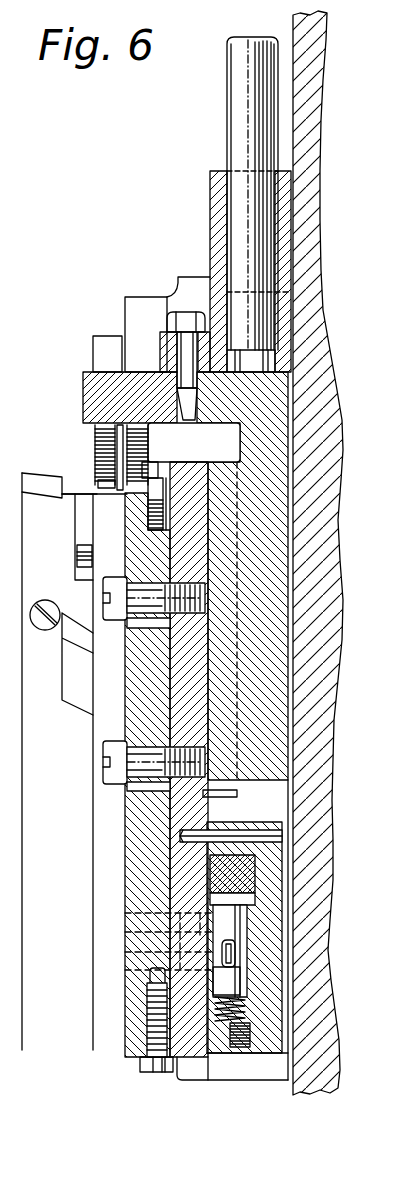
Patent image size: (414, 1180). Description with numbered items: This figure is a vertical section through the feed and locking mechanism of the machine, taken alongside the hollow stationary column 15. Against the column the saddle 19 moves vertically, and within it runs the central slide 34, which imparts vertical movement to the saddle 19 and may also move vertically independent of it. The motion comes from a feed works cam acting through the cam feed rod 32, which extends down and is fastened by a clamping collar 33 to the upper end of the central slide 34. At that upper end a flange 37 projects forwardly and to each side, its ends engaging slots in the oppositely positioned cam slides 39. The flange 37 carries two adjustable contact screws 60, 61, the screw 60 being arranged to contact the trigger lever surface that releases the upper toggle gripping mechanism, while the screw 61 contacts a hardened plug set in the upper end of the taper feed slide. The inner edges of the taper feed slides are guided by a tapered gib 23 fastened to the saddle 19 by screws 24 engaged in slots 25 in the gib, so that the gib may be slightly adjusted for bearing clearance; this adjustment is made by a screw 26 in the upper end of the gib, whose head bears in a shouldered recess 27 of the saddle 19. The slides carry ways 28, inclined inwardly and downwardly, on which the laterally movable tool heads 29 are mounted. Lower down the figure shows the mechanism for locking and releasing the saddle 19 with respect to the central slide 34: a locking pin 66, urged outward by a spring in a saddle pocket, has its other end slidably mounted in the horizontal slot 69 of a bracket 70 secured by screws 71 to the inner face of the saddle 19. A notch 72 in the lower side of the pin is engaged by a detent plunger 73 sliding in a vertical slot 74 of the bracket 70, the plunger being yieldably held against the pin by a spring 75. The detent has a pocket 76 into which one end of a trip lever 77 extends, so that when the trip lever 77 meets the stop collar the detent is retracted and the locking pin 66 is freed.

The hollow stationary column 15 is at (335, 449).
The saddle 19 is at (195, 694).
The tapered gib 23 is at (140, 712).
The screws 24 is at (135, 592).
The slots 25 is at (150, 624).
The screw 26 is at (100, 478).
The shouldered recess 27 is at (172, 462).
The ways 28 is at (82, 693).
The tool heads 29 is at (59, 761).
The cam feed rod 32 is at (238, 135).
The clamping collar 33 is at (210, 222).
The central slide 34 is at (270, 517).
The flange 37 is at (90, 388).
The cam slides 39 is at (107, 352).
The adjustable contact screw 60 is at (97, 432).
The adjustable contact screw 61 is at (97, 452).
The locking pin 66 is at (238, 877).
The horizontal slot 69 is at (283, 857).
The bracket 70 is at (243, 898).
The screws 71 is at (282, 834).
The notch 72 is at (252, 912).
The detent plunger 73 is at (238, 925).
The vertical slot 74 is at (255, 1000).
The spring 75 is at (232, 1047).
The pocket 76 is at (250, 955).
The trip lever 77 is at (255, 967).